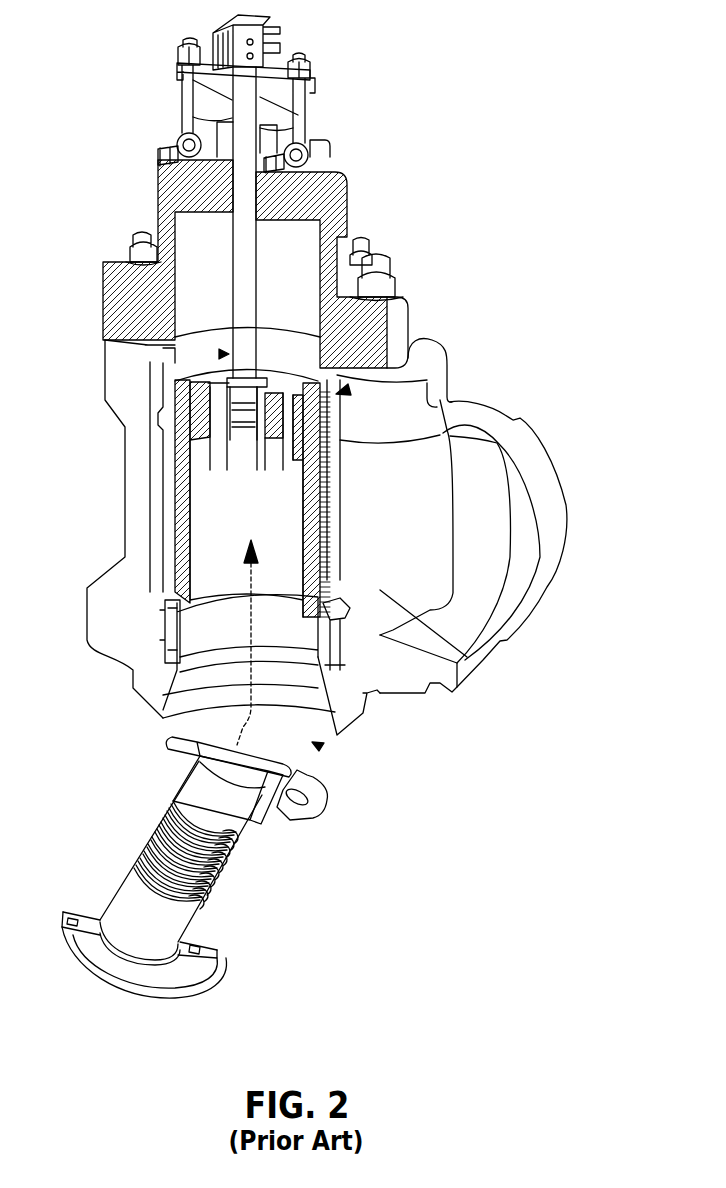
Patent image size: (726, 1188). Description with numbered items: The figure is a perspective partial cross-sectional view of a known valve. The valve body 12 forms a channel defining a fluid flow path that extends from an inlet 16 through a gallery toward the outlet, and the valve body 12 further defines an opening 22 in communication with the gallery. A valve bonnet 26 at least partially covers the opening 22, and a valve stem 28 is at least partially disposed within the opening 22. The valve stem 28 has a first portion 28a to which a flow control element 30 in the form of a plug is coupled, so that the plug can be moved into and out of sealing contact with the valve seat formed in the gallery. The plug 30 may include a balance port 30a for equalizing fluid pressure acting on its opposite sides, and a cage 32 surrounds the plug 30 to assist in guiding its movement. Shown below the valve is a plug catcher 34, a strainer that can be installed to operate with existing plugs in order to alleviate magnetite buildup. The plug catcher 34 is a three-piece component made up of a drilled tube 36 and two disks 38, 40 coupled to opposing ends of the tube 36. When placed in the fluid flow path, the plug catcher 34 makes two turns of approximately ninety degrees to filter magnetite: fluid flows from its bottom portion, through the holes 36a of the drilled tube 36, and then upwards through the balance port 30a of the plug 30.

The valve body 12 is at (545, 470).
The inlet 16 is at (320, 746).
The opening 22 is at (445, 350).
The valve bonnet 26 is at (398, 320).
The valve stem 28 is at (248, 88).
The first portion 28a is at (222, 355).
The flow control element 30 is at (193, 410).
The balance port 30a is at (220, 427).
The cage 32 is at (465, 657).
The plug catcher 34 is at (264, 813).
The drilled tube 36 is at (203, 913).
The holes 36a is at (237, 870).
The disk 38 is at (232, 973).
The disk 40 is at (313, 797).